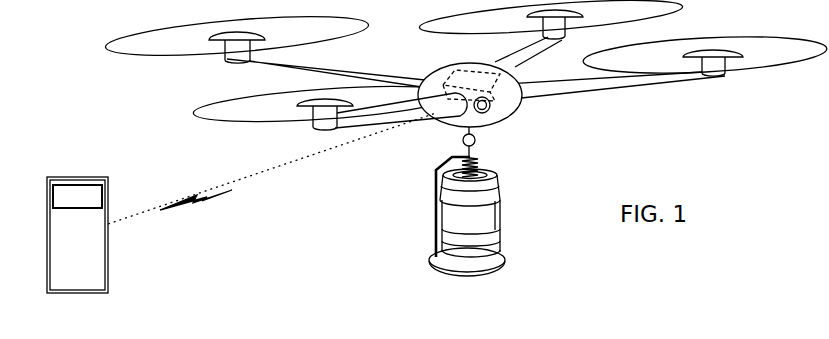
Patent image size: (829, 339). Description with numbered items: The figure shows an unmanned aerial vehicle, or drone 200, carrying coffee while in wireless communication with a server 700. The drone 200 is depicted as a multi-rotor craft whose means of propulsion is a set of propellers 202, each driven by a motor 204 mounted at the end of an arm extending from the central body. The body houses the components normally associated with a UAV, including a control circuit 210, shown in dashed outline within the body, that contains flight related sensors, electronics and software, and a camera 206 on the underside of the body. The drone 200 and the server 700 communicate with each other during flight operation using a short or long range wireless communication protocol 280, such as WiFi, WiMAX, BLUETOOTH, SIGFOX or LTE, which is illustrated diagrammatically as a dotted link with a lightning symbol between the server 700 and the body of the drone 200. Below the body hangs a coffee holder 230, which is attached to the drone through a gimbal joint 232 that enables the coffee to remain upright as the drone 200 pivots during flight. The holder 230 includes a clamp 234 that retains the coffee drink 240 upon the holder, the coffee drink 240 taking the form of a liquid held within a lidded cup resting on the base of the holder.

The drone 200 is at (569, 113).
The propellers 202 is at (188, 114).
The motor 204 is at (227, 60).
The camera 206 is at (495, 116).
The control circuit 210 is at (452, 76).
The coffee holder 230 is at (388, 229).
The gimbal joint 232 is at (457, 148).
The clamp 234 is at (482, 222).
The coffee drink 240 is at (475, 254).
The wireless communication protocol 280 is at (210, 208).
The server 700 is at (102, 257).